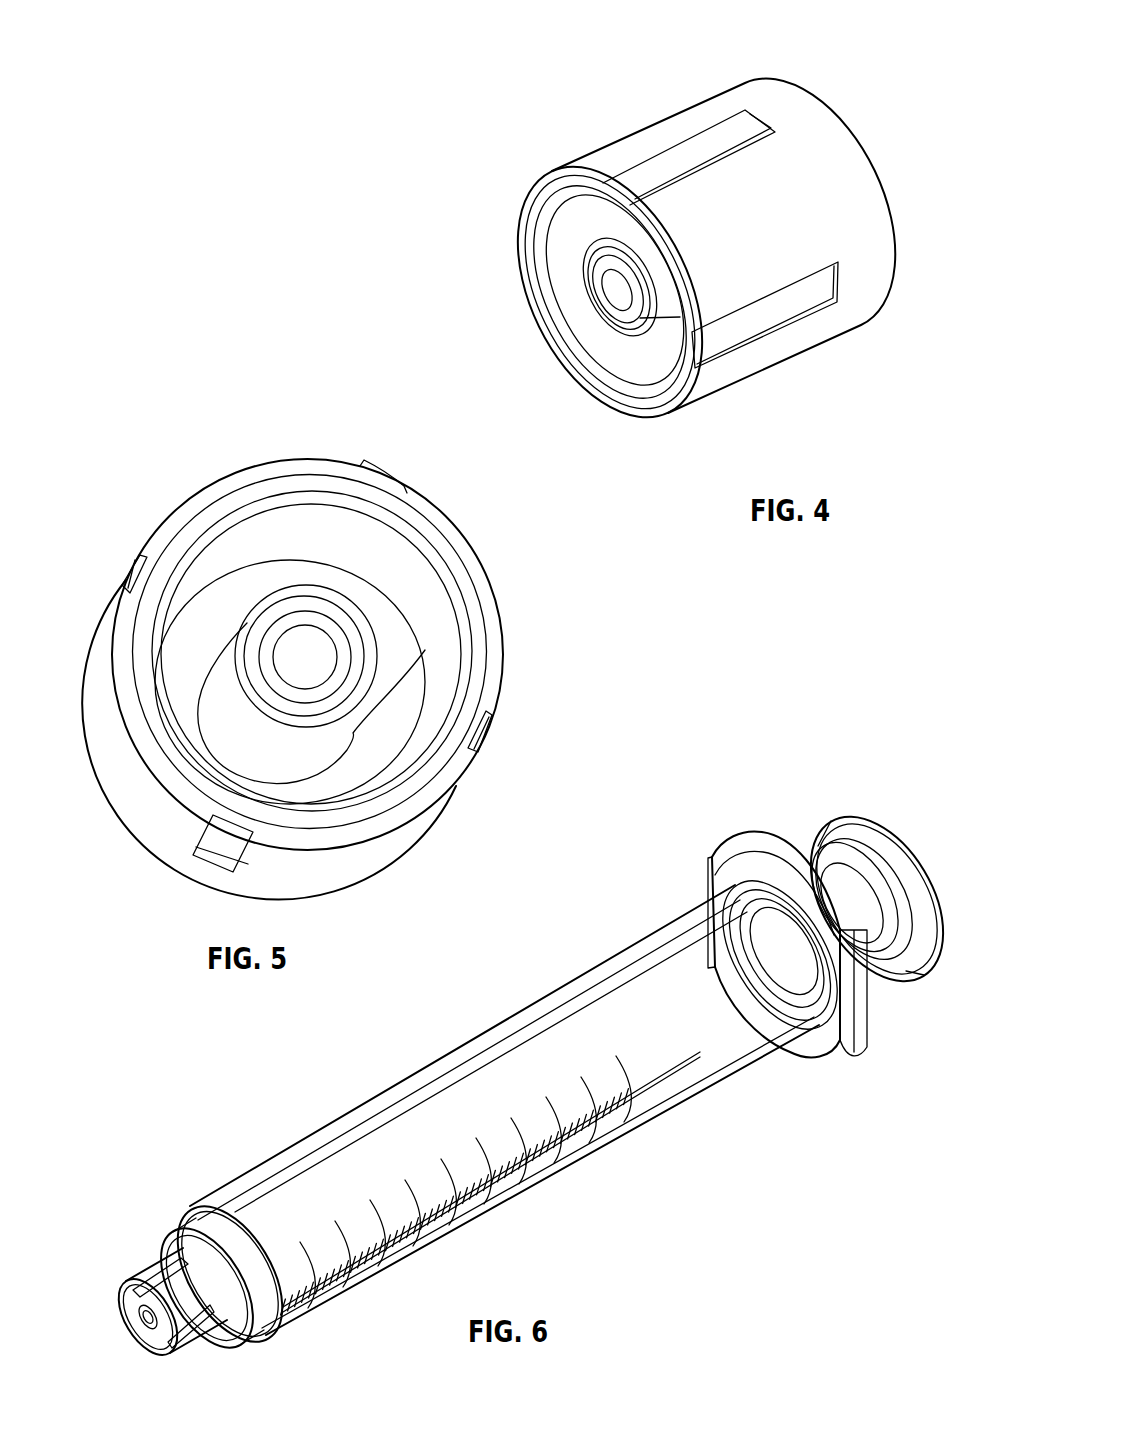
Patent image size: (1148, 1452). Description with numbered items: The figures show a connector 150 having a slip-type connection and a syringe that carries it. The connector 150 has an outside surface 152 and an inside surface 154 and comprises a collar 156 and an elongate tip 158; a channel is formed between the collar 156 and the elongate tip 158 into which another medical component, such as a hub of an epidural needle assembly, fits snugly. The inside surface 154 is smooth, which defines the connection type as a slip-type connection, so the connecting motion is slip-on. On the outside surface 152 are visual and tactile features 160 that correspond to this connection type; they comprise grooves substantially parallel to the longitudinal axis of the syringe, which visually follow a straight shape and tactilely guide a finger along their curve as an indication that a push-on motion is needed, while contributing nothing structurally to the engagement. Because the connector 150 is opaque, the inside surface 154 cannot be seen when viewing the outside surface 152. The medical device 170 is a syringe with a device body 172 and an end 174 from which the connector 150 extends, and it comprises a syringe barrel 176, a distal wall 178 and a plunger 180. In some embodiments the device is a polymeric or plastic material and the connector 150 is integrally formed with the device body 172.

In FIG. 4, the connector 150 is at (657, 48).
In FIG. 5, the connector 150 is at (500, 588).
In FIG. 6, the connector 150 is at (145, 1347).
In FIG. 4, the outside surface 152 is at (872, 212).
In FIG. 5, the outside surface 152 is at (135, 830).
In FIG. 4, the inside surface 154 is at (594, 345).
In FIG. 5, the inside surface 154 is at (425, 600).
In FIG. 4, the collar 156 is at (563, 178).
In FIG. 5, the collar 156 is at (478, 667).
In FIG. 4, the elongate tip 158 is at (641, 320).
In FIG. 5, the elongate tip 158 is at (340, 652).
In FIG. 4, the visual and tactile features 160 is at (712, 146).
In FIG. 5, the visual and tactile features 160 is at (131, 572).
In FIG. 6, the visual and tactile features 160 is at (166, 1263).
In FIG. 6, the medical device 170 is at (266, 1073).
In FIG. 6, the device body 172 is at (706, 1016).
In FIG. 6, the end 174 is at (167, 1224).
In FIG. 6, the syringe barrel 176 is at (710, 903).
In FIG. 6, the distal wall 178 is at (262, 1333).
In FIG. 6, the plunger 180 is at (866, 820).